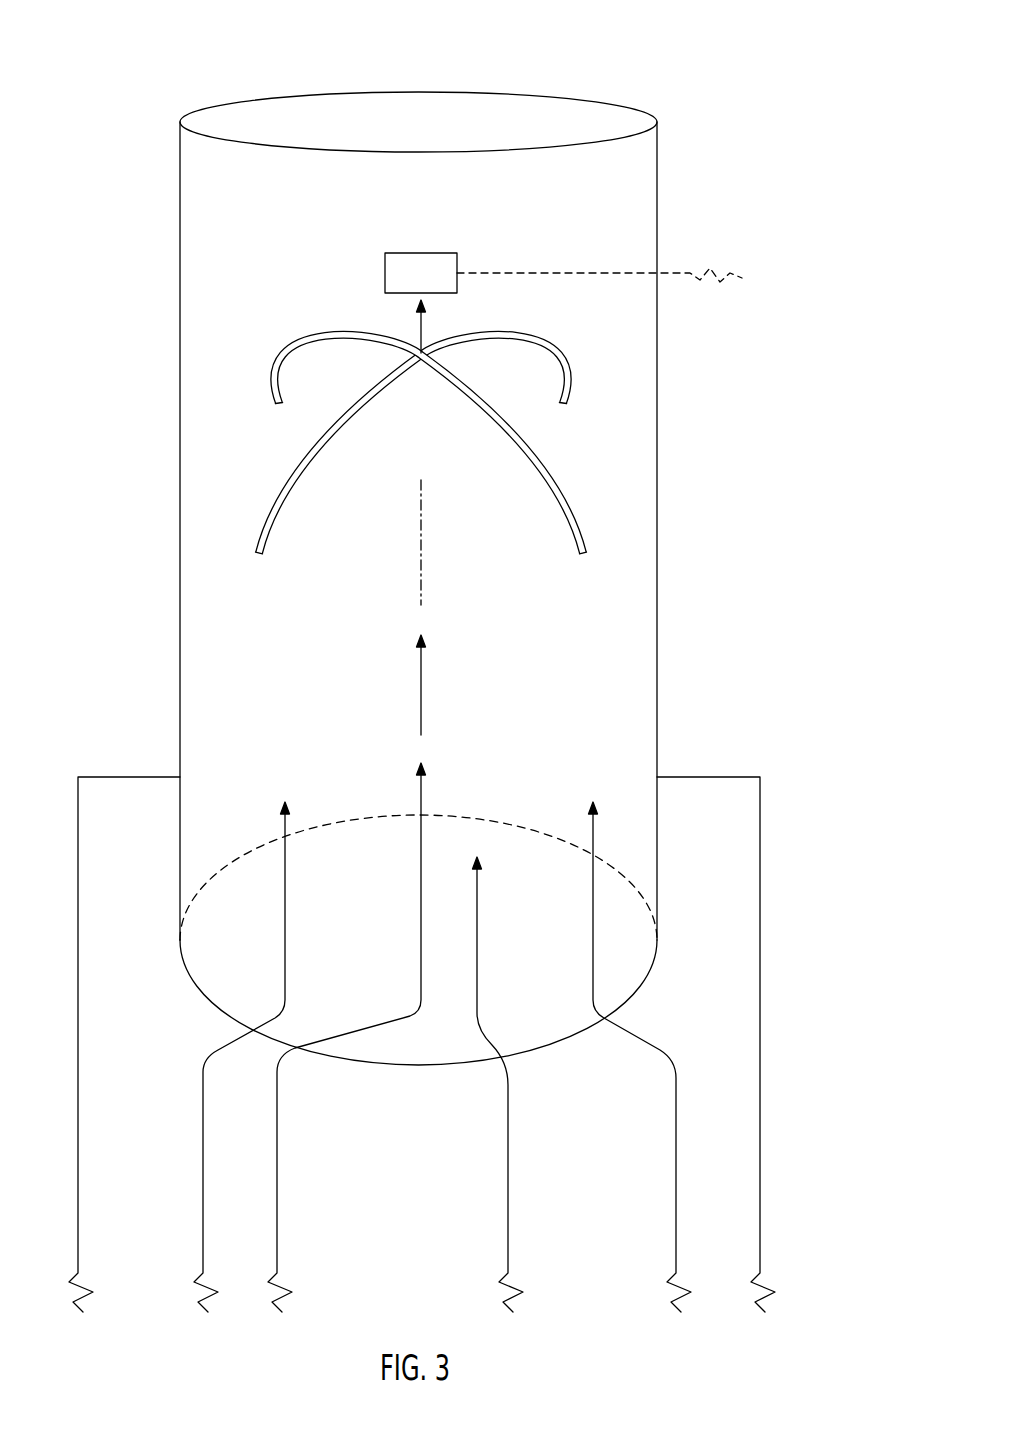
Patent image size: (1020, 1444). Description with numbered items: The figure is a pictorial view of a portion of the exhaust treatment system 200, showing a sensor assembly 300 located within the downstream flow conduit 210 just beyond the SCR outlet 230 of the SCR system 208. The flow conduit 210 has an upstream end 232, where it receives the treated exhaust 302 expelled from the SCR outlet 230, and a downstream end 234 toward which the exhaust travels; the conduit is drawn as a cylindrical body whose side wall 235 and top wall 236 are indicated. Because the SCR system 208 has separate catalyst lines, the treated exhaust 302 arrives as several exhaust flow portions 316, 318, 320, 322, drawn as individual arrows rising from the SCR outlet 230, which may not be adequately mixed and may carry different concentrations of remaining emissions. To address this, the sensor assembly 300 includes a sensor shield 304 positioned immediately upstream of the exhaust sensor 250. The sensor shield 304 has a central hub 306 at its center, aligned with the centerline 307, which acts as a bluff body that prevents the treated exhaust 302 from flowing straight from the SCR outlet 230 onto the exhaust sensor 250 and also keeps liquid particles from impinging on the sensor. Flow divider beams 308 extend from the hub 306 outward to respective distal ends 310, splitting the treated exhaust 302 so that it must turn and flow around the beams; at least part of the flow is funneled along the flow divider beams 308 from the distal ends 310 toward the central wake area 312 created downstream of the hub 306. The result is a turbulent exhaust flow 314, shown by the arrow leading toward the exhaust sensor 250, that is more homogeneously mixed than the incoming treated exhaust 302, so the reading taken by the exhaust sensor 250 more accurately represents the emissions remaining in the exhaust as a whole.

The exhaust treatment system 200 is at (700, 110).
The SCR system 208 is at (760, 1078).
The downstream flow conduit 210 is at (707, 662).
The SCR outlet 230 is at (162, 913).
The upstream end 232 is at (418, 1002).
The downstream end 234 is at (180, 180).
The side wall 235 is at (657, 438).
The top wall 236 is at (250, 78).
The exhaust sensor 250 is at (438, 287).
The sensor assembly 300 is at (100, 345).
The treated exhaust 302 is at (421, 695).
The sensor shield 304 is at (265, 315).
The hub 306 is at (421, 368).
The centerline 307 is at (421, 565).
The flow divider beams 308 is at (372, 342).
The distal ends 310 is at (280, 407).
The wake area 312 is at (452, 318).
The turbulent exhaust flow 314 is at (418, 328).
The exhaust flow portion 316 is at (285, 938).
The exhaust flow portion 318 is at (477, 1040).
The exhaust flow portion 320 is at (593, 836).
The exhaust flow portion 322 is at (421, 828).